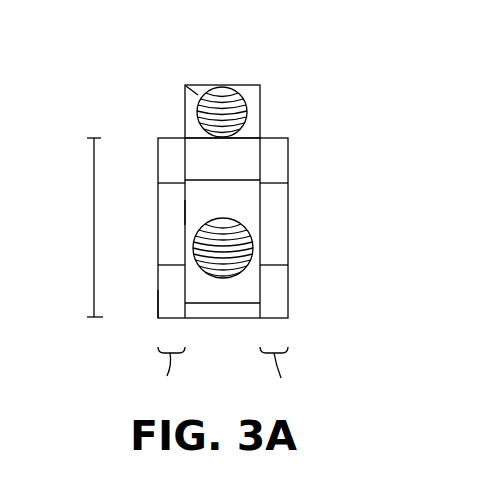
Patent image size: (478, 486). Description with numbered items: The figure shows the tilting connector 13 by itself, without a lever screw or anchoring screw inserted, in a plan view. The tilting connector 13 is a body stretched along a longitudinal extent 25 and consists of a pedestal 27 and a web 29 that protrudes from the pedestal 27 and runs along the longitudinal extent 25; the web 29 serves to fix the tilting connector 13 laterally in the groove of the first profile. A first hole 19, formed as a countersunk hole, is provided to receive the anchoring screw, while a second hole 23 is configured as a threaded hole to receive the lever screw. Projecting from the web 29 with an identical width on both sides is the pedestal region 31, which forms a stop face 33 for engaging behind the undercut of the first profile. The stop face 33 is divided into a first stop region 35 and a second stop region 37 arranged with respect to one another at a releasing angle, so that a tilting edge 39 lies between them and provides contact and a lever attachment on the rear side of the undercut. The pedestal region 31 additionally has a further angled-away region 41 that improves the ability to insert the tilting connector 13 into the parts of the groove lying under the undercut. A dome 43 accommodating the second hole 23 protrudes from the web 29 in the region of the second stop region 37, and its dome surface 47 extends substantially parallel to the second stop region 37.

The tilting connector 13 is at (362, 68).
The first hole 19 is at (222, 256).
The second hole 23 is at (225, 110).
The longitudinal extent 25 is at (94, 220).
The pedestal 27 is at (289, 203).
The web 29 is at (228, 293).
The pedestal region 31 is at (228, 376).
The stop face 33 is at (165, 240).
The first stop region 35 is at (183, 213).
The second stop region 37 is at (173, 163).
The tilting edge 39 is at (158, 183).
The angled-away region 41 is at (158, 300).
The dome 43 is at (260, 98).
The dome surface 47 is at (198, 95).